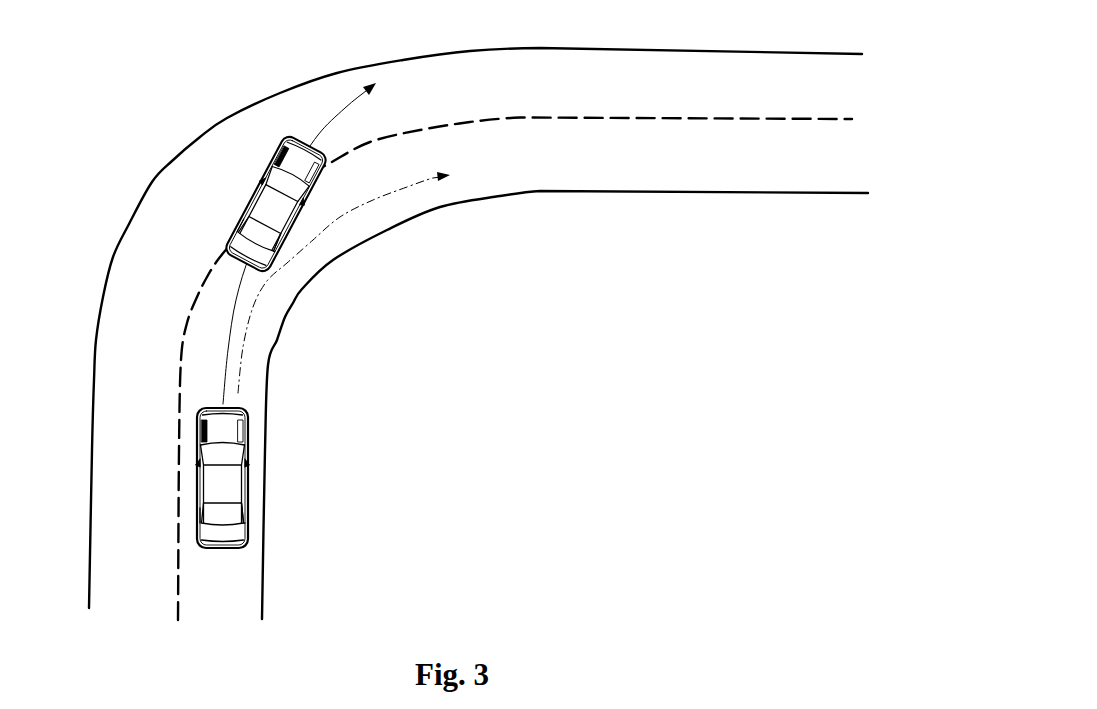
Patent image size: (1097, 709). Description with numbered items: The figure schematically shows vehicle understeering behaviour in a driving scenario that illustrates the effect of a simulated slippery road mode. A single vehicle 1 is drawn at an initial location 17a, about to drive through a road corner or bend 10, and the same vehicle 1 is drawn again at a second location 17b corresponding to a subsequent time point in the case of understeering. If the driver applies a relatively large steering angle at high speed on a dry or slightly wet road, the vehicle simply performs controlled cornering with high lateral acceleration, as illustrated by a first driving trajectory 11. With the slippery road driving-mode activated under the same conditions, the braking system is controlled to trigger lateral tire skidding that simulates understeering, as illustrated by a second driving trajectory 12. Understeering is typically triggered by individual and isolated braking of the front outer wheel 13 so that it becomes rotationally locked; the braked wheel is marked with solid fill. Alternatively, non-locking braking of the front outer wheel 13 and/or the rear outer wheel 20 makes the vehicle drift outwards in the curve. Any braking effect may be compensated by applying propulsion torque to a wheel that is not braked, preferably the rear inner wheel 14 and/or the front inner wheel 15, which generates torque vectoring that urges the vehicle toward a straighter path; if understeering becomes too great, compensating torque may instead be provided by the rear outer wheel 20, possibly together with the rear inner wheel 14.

The vehicle 1 is at (222, 487).
The road corner or bend 10 is at (330, 243).
The first driving trajectory 11 is at (435, 182).
The second driving trajectory 12 is at (352, 105).
The front outer wheel 13 is at (200, 428).
The rear inner wheel 14 is at (245, 515).
The front inner wheel 15 is at (245, 431).
The initial location 17a is at (152, 405).
The second location 17b is at (288, 122).
The rear outer wheel 20 is at (200, 513).